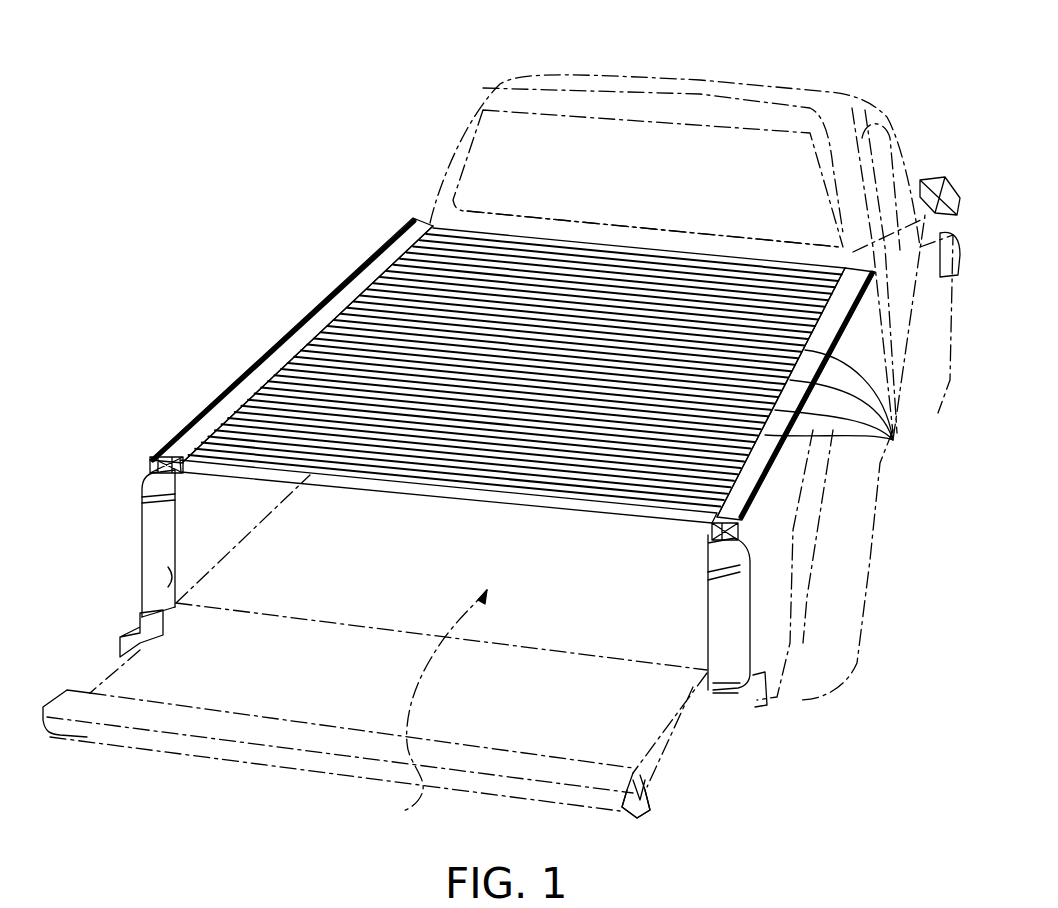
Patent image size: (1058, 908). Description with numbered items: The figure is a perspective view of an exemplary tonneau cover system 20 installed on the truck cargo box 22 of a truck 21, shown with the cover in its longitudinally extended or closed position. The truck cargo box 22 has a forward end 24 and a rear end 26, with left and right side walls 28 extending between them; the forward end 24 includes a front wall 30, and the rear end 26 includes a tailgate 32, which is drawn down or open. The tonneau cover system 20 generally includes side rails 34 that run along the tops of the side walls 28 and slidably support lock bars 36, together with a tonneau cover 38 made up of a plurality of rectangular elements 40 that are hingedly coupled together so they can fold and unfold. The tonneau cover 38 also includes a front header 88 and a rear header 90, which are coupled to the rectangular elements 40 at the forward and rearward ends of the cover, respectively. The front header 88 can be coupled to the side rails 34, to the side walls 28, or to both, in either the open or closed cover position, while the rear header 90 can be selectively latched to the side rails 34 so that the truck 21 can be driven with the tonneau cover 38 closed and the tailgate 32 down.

The tonneau cover system 20 is at (508, 354).
The truck 21 is at (715, 82).
The truck cargo box 22 is at (405, 810).
The forward end 24 is at (514, 345).
The rear end 26 is at (165, 586).
The side walls 28 is at (147, 487).
The front wall 30 is at (515, 345).
The tailgate 32 is at (653, 787).
The side rails 34 is at (202, 423).
The lock bars 36 is at (152, 463).
The tonneau cover 38 is at (595, 300).
The rectangular elements 40 is at (893, 442).
The front header 88 is at (755, 265).
The rear header 90 is at (472, 483).